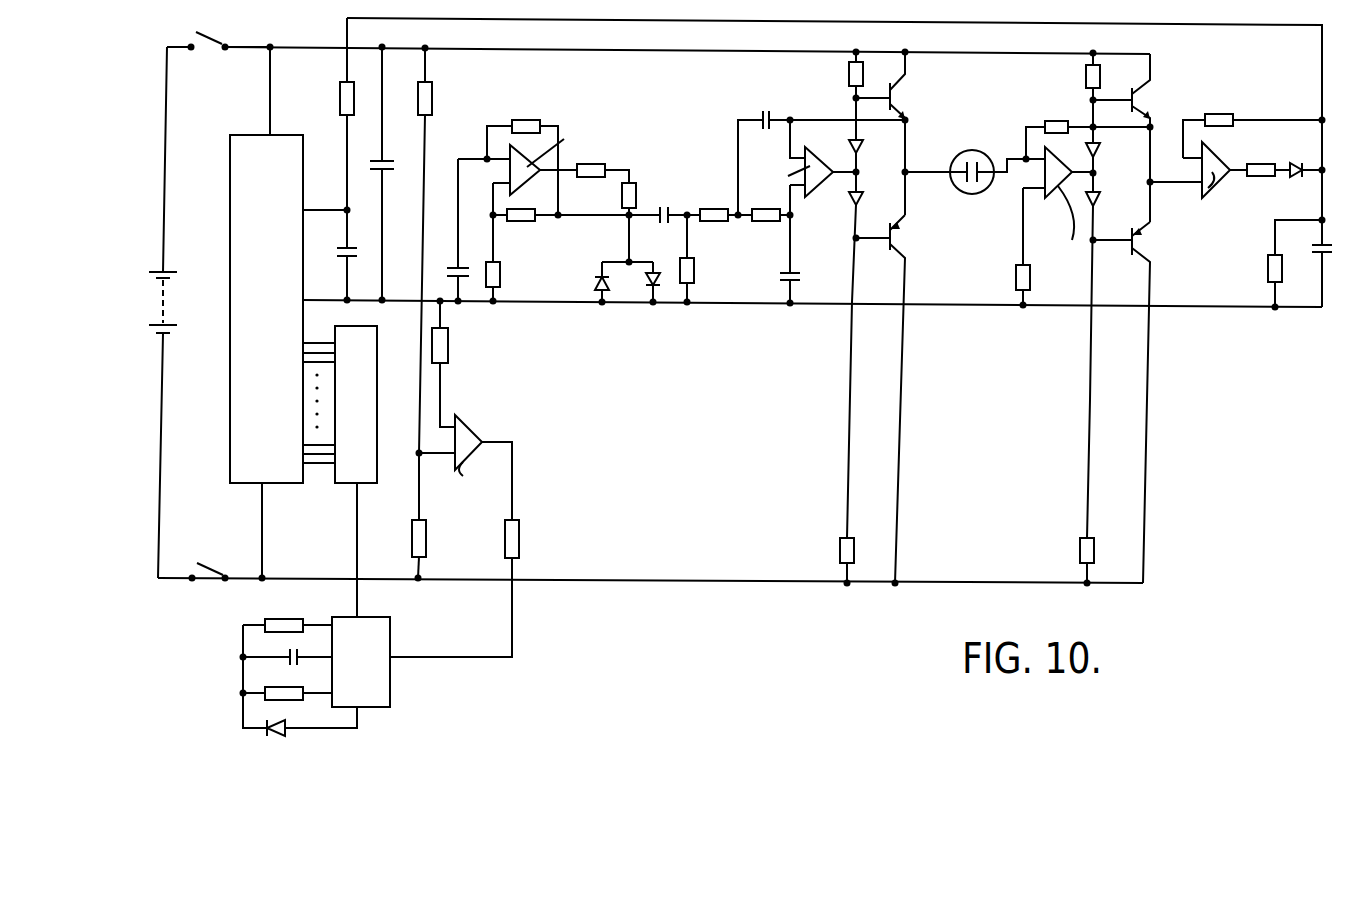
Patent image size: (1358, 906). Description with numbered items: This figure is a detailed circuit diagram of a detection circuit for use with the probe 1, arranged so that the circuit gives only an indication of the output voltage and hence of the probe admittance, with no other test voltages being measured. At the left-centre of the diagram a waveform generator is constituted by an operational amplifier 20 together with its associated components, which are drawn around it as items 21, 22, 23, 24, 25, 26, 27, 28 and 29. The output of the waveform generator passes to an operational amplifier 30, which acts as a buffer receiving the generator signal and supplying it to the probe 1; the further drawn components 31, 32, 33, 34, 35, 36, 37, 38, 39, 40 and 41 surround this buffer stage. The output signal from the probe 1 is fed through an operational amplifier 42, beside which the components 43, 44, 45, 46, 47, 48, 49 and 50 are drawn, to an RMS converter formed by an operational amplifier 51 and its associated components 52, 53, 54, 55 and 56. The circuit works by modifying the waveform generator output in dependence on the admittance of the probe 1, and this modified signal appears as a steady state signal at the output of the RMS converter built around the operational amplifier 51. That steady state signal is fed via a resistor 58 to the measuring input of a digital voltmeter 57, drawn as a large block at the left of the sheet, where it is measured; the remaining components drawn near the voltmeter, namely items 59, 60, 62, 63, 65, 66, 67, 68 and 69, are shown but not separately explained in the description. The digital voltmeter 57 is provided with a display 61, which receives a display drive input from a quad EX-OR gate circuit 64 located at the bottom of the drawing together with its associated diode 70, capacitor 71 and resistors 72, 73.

The probe 1 is at (958, 194).
The operational amplifier 20 is at (510, 169).
The diode 21 is at (648, 281).
The diode 22 is at (596, 280).
The resistor 23 is at (500, 276).
The resistor 24 is at (518, 221).
The resistor 25 is at (522, 120).
The resistor 26 is at (600, 165).
The resistor 27 is at (638, 200).
The capacitor 28 is at (448, 270).
The capacitor 29 is at (668, 224).
The operational amplifier 30 is at (815, 186).
The transistor 31 is at (906, 100).
The transistor 32 is at (902, 242).
The diode 33 is at (863, 146).
The diode 34 is at (863, 197).
The resistor 35 is at (848, 72).
The resistor 36 is at (840, 552).
The resistor 37 is at (775, 222).
The resistor 38 is at (720, 222).
The capacitor 39 is at (762, 116).
The capacitor 40 is at (786, 284).
The resistor 41 is at (692, 286).
The operational amplifier 42 is at (1060, 149).
The transistor 43 is at (1152, 96).
The transistor 44 is at (1146, 246).
The diode 45 is at (1100, 150).
The diode 46 is at (1102, 200).
The resistor 47 is at (1085, 76).
The resistor 48 is at (1080, 550).
The resistor 49 is at (1052, 120).
The resistor 50 is at (1031, 282).
The operational amplifier 51 is at (1200, 170).
The diode 52 is at (1292, 178).
The capacitor 53 is at (1314, 249).
The resistor 54 is at (1220, 113).
The resistor 55 is at (1252, 163).
The resistor 56 is at (1268, 277).
The digital voltmeter 57 is at (274, 470).
The resistor 58 is at (340, 102).
The capacitor 59 is at (356, 252).
The capacitor 60 is at (390, 165).
The display 61 is at (364, 478).
The battery 62 is at (170, 306).
The switch 63 is at (203, 52).
The quad EX-OR gate circuit 64 is at (392, 679).
The operational amplifier 65 is at (465, 425).
The resistor 66 is at (432, 100).
The resistor 67 is at (426, 540).
The resistor 68 is at (448, 345).
The resistor 69 is at (520, 540).
The diode 70 is at (272, 722).
The capacitor 71 is at (288, 652).
The resistor 72 is at (290, 619).
The resistor 73 is at (280, 690).